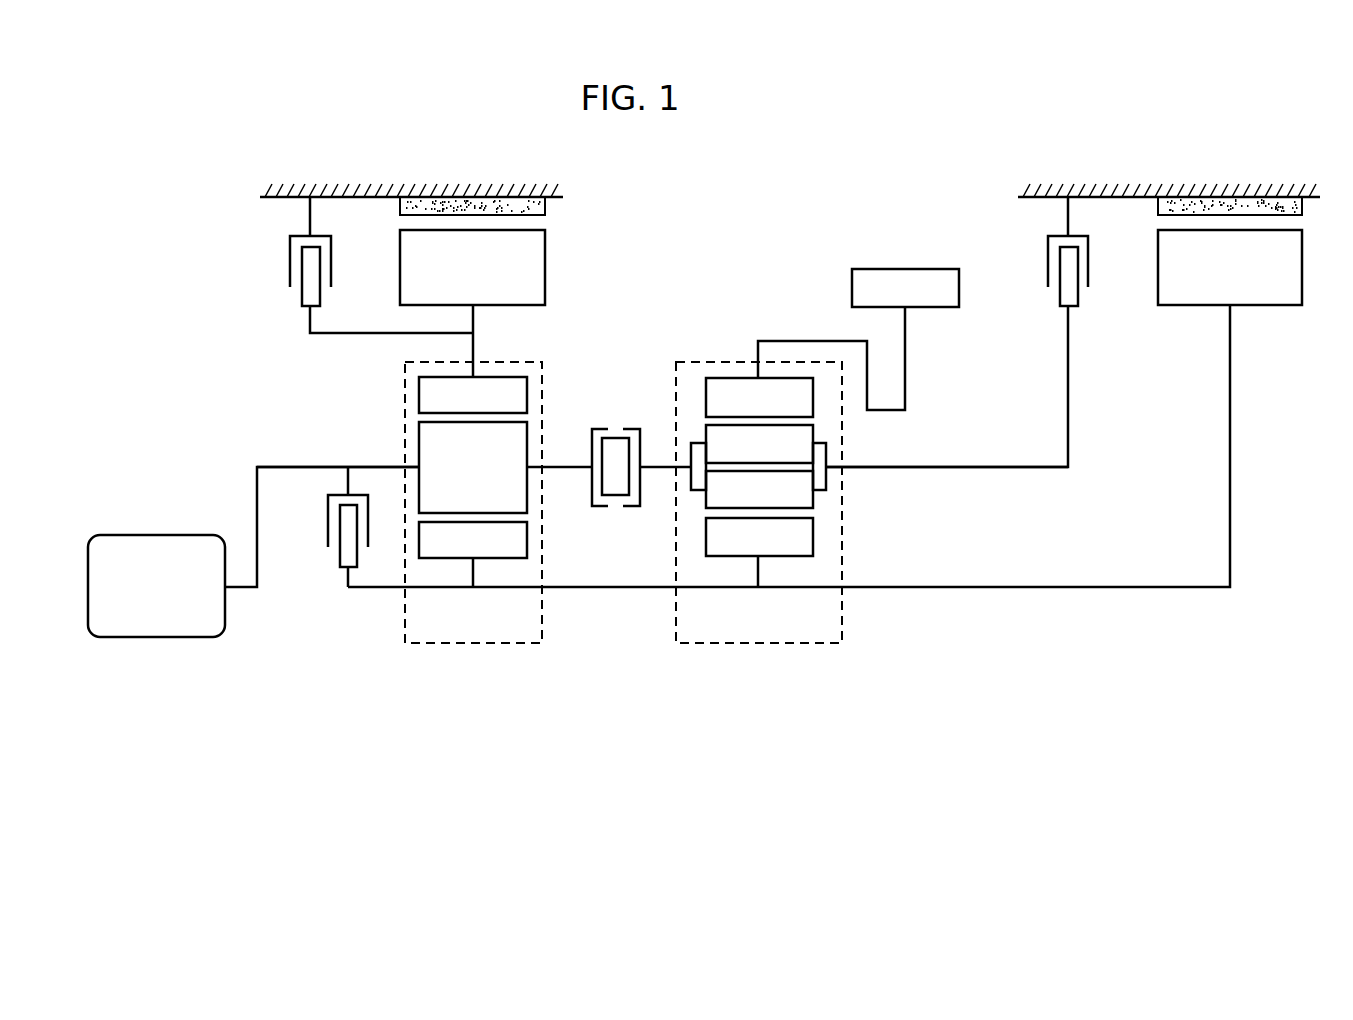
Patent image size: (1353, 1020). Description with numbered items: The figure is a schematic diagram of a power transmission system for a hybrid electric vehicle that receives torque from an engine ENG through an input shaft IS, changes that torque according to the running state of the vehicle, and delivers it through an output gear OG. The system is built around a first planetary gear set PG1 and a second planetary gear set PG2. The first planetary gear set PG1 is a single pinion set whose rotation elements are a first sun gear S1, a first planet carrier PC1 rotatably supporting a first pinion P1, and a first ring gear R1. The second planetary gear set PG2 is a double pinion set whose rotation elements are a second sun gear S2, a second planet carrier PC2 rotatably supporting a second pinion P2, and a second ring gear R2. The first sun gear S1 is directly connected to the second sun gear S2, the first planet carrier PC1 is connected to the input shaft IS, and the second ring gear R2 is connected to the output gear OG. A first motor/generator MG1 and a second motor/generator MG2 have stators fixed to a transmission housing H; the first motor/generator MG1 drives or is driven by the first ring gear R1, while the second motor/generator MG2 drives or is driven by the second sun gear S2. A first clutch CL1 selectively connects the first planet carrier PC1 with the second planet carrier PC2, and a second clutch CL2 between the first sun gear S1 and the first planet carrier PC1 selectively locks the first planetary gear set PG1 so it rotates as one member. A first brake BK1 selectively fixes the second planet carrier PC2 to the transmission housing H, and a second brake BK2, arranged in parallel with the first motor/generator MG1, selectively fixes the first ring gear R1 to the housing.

The transmission housing H is at (440, 190).
The engine ENG is at (156, 586).
The input shaft IS is at (240, 590).
The first motor/generator MG1 is at (472, 287).
The second motor/generator MG2 is at (825, 392).
The first brake BK1 is at (957, 332).
The second brake BK2 is at (357, 265).
The first clutch CL1 is at (641, 485).
The second clutch CL2 is at (323, 527).
The first planetary gear set PG1 is at (470, 645).
The second planetary gear set PG2 is at (757, 645).
The first ring gear R1 is at (473, 395).
The first pinion P1 is at (505, 467).
The first sun gear S1 is at (473, 554).
The second ring gear R2 is at (759, 397).
The second pinion P2 is at (712, 495).
The second sun gear S2 is at (759, 552).
The first planet carrier PC1 is at (378, 465).
The second planet carrier PC2 is at (862, 470).
The output gear OG is at (858, 339).